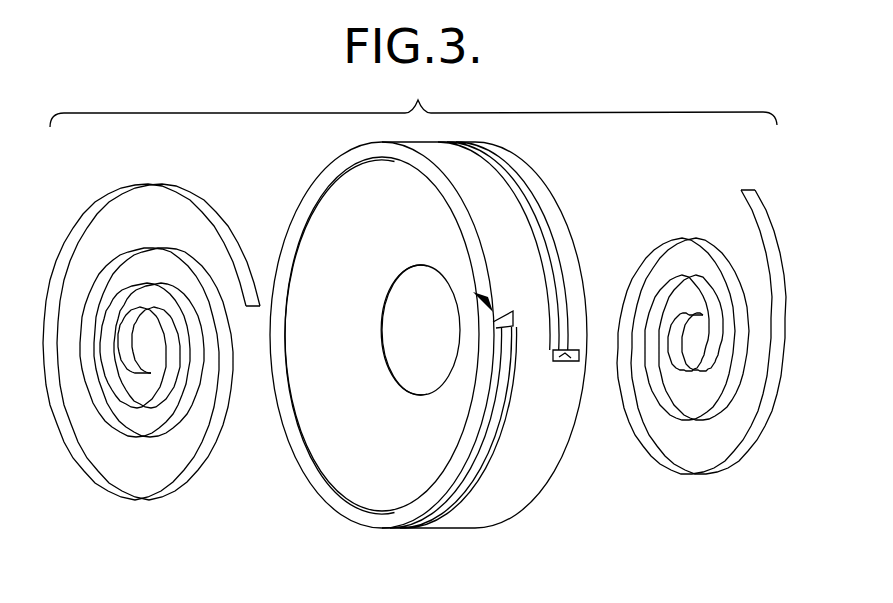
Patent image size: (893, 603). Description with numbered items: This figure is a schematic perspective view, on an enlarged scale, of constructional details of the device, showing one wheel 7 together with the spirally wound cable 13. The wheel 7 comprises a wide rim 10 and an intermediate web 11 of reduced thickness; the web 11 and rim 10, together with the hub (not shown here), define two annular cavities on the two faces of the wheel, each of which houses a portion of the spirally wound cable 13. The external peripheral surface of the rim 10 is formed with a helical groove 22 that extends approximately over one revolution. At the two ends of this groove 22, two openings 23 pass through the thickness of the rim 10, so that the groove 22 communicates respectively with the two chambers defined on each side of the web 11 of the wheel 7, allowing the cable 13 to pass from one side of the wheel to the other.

The wheel 7 is at (531, 501).
The rim 10 is at (540, 455).
The intermediate web 11 is at (363, 453).
The spirally wound cable 13 is at (182, 473).
The helical groove 22 is at (522, 197).
The opening 23 is at (473, 293).